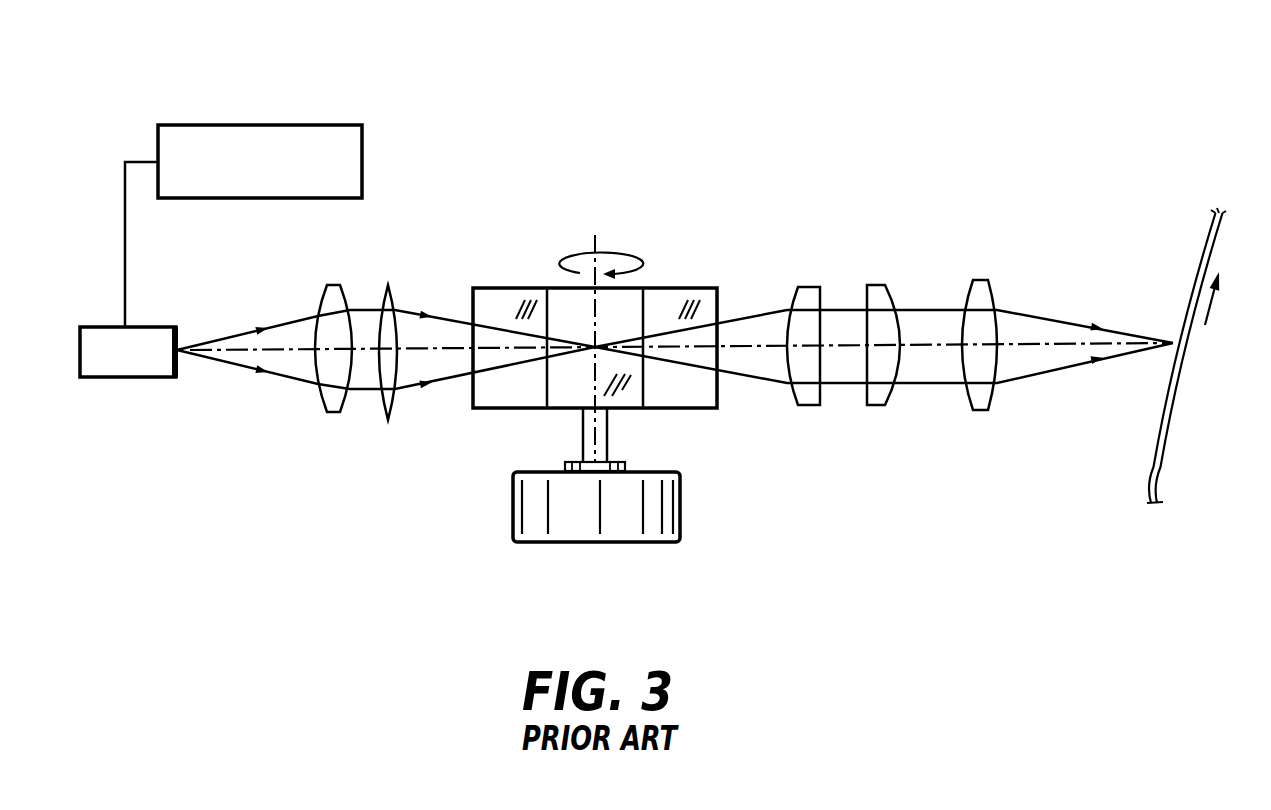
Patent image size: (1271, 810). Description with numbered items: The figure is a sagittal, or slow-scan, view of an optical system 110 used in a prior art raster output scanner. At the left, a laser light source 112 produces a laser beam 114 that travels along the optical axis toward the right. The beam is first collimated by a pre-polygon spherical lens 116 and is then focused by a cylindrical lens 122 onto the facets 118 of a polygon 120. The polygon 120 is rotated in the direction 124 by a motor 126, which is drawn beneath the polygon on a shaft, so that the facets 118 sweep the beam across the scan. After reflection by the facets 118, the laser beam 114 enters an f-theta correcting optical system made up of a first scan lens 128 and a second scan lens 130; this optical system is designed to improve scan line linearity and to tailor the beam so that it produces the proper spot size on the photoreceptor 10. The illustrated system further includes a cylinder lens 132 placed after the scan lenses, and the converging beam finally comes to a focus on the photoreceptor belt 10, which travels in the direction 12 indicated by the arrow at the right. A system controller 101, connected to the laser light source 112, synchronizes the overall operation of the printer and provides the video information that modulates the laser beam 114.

The photoreceptor belt 10 is at (1157, 430).
The direction of belt travel 12 is at (1213, 303).
The system controller 101 is at (318, 123).
The optical system 110 is at (838, 76).
The laser light source 112 is at (100, 377).
The laser beam 114 is at (295, 322).
The pre-polygon spherical lens 116 is at (332, 405).
The facets 118 is at (580, 348).
The polygon 120 is at (518, 410).
The cylindrical lens 122 is at (388, 420).
The direction of rotation 124 is at (575, 253).
The motor 126 is at (568, 543).
The first scan lens 128 is at (810, 407).
The second scan lens 130 is at (882, 283).
The cylinder lens 132 is at (980, 405).